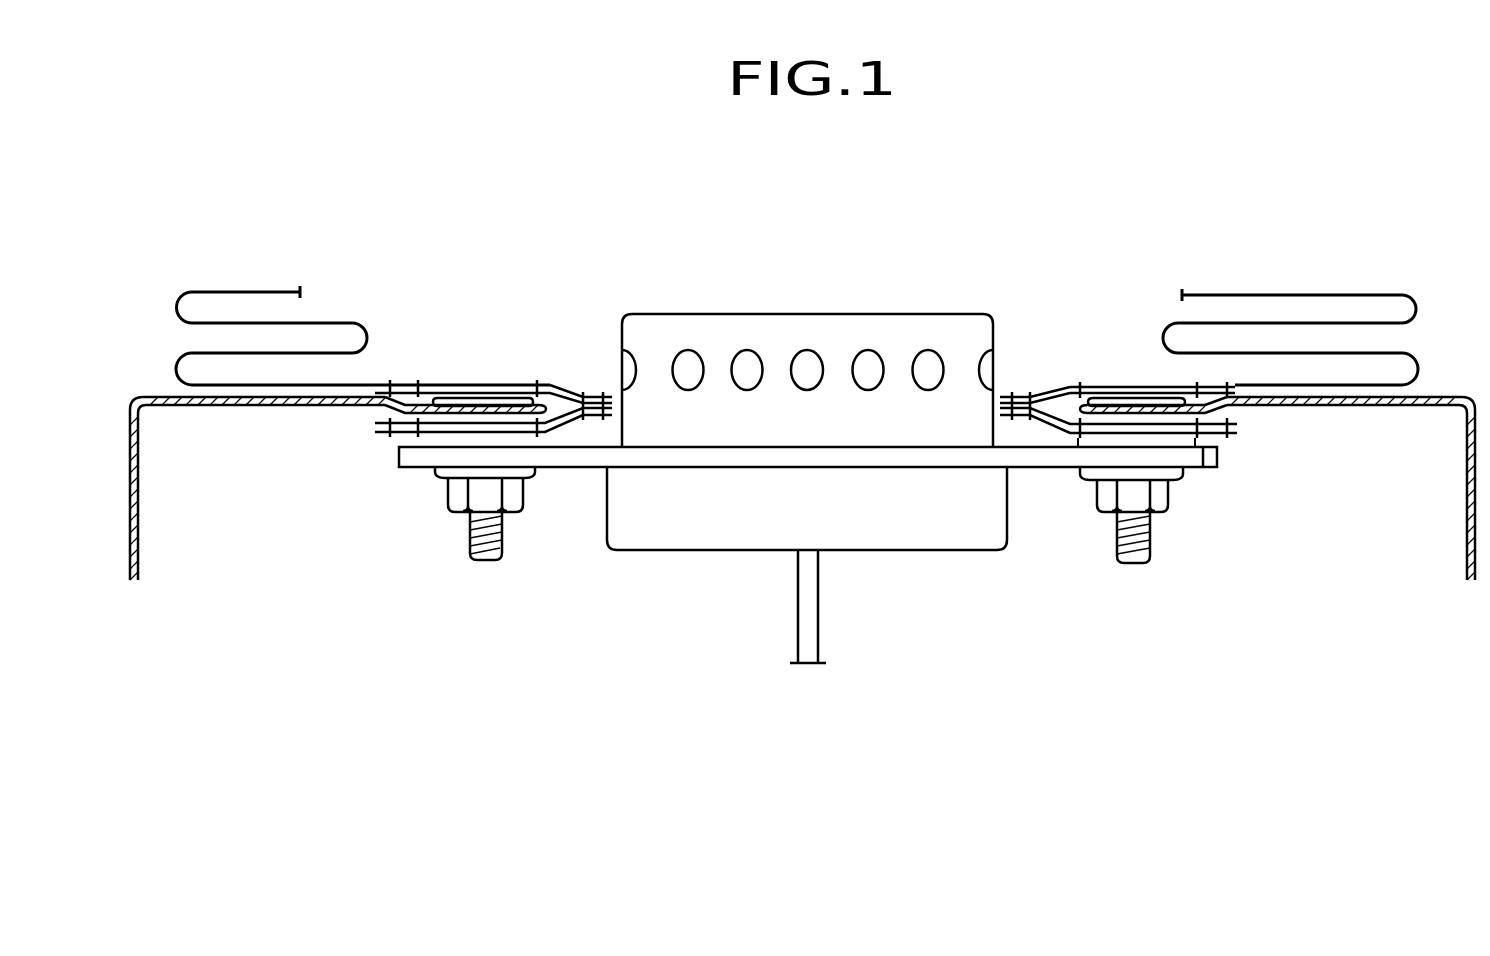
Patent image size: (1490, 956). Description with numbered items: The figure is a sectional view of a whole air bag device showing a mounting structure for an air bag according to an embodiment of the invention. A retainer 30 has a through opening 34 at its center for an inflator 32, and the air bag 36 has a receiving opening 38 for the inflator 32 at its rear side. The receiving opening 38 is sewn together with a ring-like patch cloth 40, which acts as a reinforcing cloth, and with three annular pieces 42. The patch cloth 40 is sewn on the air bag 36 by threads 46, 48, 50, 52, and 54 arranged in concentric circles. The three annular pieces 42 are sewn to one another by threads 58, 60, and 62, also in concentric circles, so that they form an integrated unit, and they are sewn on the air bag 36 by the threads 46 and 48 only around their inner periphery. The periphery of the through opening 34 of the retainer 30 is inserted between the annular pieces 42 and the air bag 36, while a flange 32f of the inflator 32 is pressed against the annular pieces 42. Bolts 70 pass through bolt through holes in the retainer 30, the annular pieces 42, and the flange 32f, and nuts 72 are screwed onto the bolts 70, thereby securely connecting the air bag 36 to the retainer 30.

The retainer 30 is at (232, 407).
The inflator 32 is at (620, 535).
The flange 32f is at (1018, 548).
The through opening 34 is at (552, 390).
The air bag 36 is at (1243, 295).
The receiving opening 38 is at (610, 392).
The patch cloth 40 is at (408, 397).
The annular pieces 42 is at (367, 430).
The thread 46 is at (1013, 392).
The thread 48 is at (1030, 398).
The thread 50 is at (1080, 393).
The thread 52 is at (1197, 393).
The thread 54 is at (1232, 368).
The thread 58 is at (1078, 445).
The thread 60 is at (1195, 437).
The thread 62 is at (1227, 438).
The bolts 70 is at (465, 545).
The nuts 72 is at (523, 503).